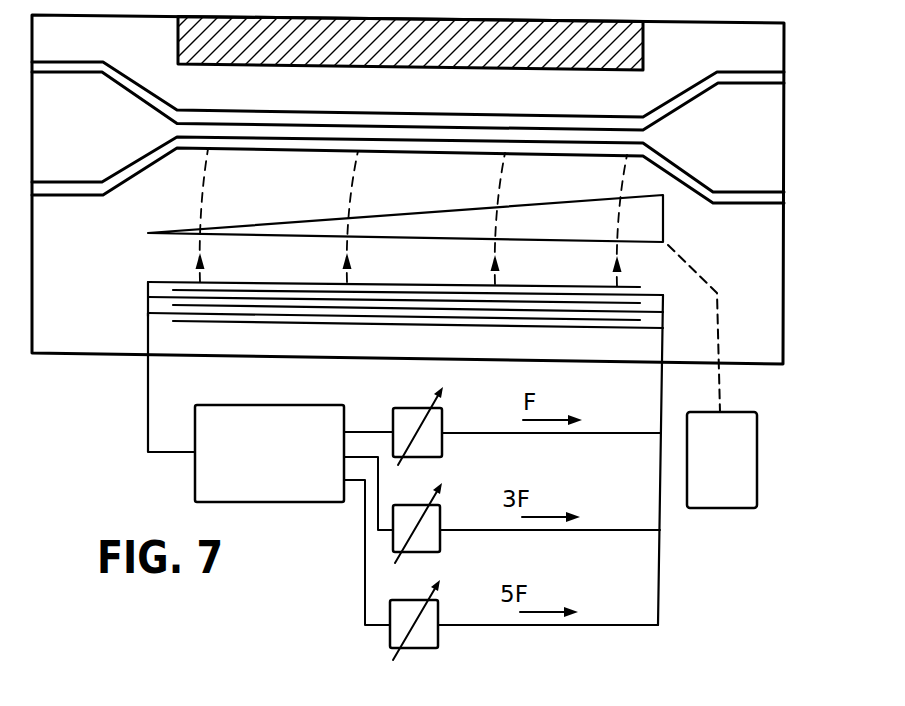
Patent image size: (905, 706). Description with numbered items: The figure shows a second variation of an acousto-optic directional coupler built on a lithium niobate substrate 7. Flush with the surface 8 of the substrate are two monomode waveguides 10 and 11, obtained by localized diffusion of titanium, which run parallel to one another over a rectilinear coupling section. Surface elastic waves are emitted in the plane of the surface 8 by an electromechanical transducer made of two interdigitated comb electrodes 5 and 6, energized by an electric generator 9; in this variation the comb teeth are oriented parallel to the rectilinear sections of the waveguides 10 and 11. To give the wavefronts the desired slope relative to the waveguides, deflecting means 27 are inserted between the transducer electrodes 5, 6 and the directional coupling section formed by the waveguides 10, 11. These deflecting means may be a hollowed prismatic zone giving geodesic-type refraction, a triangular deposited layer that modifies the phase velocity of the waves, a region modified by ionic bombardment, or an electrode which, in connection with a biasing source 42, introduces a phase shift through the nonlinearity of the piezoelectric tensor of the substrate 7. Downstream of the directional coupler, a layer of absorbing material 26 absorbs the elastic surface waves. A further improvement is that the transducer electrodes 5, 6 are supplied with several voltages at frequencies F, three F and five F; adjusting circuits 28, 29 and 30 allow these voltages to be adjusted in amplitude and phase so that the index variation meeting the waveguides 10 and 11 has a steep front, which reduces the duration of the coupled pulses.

The electrode 5 is at (148, 303).
The electrode 6 is at (663, 311).
The substrate 7 is at (133, 355).
The surface 8 is at (57, 341).
The electric generator 9 is at (245, 405).
The monomode waveguide 10 is at (251, 109).
The monomode waveguide 11 is at (297, 150).
The layer of absorbing material 26 is at (643, 47).
The deflecting means 27 is at (663, 217).
The adjusting circuit 28 is at (418, 408).
The adjusting circuit 29 is at (419, 505).
The adjusting circuit 30 is at (416, 600).
The biasing source 42 is at (737, 509).